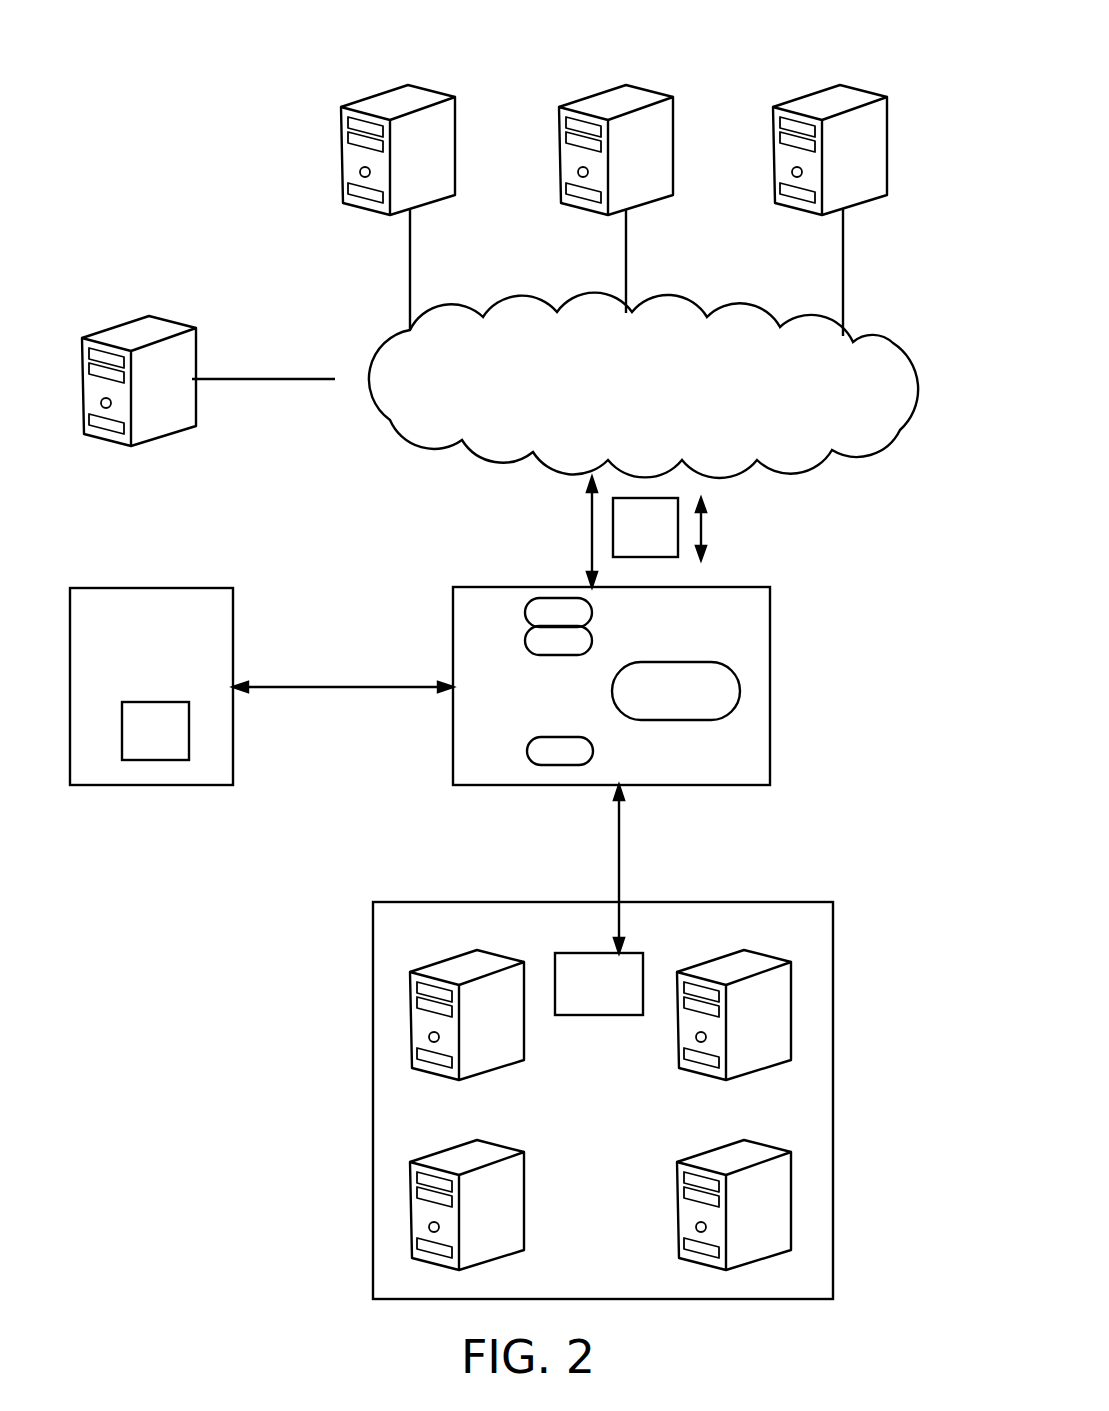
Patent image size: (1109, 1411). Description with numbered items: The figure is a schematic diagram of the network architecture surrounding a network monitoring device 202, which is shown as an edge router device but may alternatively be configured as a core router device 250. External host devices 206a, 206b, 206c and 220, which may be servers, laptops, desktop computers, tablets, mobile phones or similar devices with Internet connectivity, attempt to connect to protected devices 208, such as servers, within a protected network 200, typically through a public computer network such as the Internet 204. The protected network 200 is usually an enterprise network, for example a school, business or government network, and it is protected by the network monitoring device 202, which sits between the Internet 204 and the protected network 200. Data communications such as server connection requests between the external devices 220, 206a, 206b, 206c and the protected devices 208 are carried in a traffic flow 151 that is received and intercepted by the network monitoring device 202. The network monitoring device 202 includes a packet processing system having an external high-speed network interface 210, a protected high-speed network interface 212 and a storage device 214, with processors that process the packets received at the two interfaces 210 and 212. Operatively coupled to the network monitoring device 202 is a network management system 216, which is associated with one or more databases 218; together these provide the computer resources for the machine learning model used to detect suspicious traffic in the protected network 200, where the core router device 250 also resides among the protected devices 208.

The traffic flow 151 is at (665, 539).
The protected network 200 is at (779, 899).
The network monitoring device 202 is at (735, 585).
The Internet 204 is at (897, 337).
The external host device 206a is at (385, 98).
The external host device 206b is at (603, 98).
The external host device 206c is at (818, 98).
The protected device 208 is at (410, 1027).
The external high-speed network interface 210 is at (557, 599).
The protected high-speed network interface 212 is at (545, 766).
The storage device 214 is at (526, 642).
The network management system 216 is at (161, 584).
The database 218 is at (155, 761).
The external host device 220 is at (123, 330).
The core router device 250 is at (583, 1016).